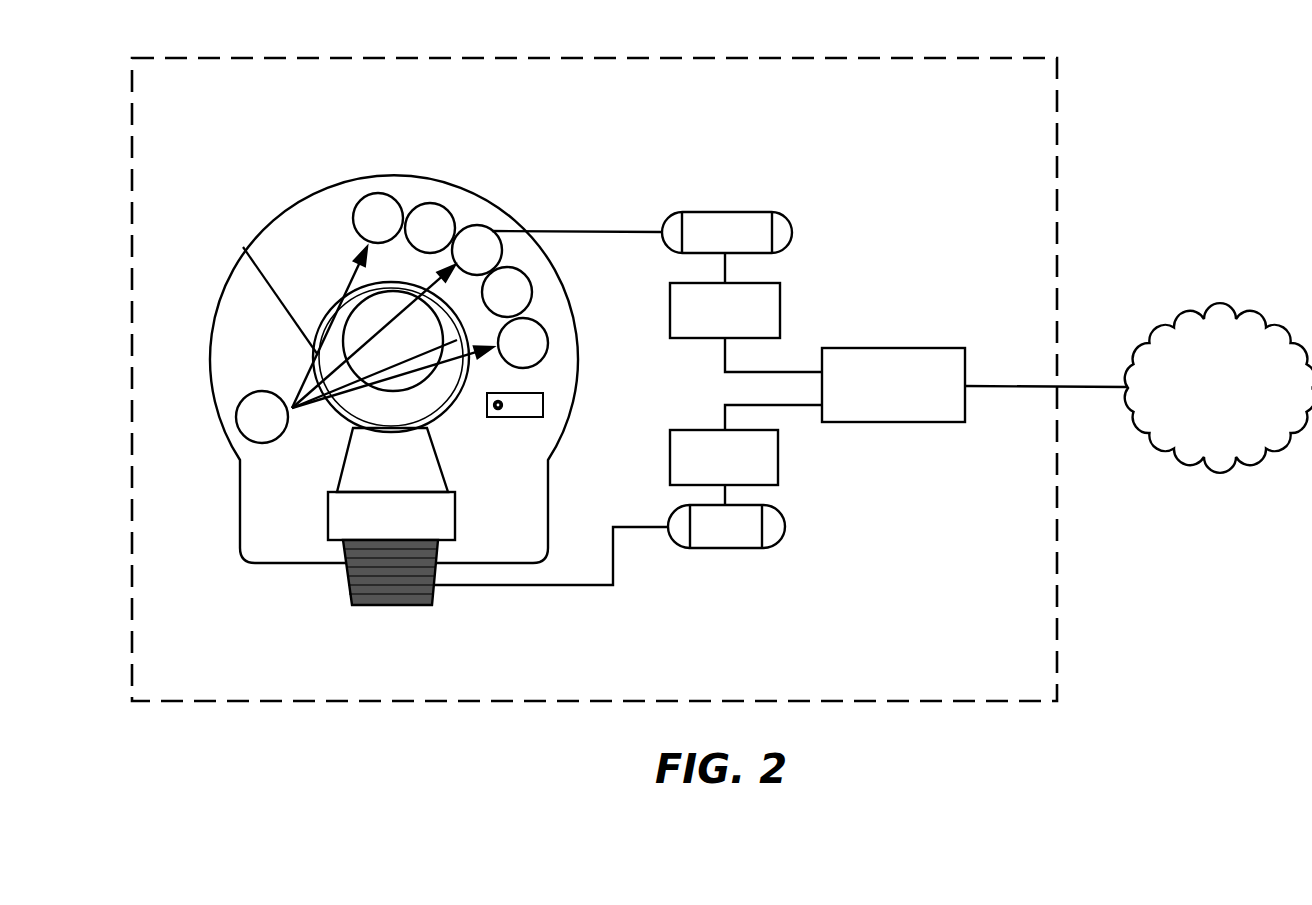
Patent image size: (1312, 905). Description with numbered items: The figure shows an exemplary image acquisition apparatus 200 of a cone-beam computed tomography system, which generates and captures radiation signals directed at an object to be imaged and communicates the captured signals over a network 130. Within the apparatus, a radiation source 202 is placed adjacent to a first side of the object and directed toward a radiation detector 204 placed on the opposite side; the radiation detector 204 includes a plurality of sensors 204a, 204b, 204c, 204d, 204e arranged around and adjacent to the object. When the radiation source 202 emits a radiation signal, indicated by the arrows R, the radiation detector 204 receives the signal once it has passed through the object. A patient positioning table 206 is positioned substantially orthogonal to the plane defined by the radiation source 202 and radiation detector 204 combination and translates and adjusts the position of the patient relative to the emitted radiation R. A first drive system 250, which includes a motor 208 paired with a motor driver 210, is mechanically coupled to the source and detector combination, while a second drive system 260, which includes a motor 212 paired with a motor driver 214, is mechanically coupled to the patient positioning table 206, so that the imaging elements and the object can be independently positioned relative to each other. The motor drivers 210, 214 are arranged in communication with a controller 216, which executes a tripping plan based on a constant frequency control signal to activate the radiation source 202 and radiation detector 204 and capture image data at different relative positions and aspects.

The image acquisition apparatus 200 is at (317, 47).
The radiation source 202 is at (245, 403).
The radiation detector 204 is at (420, 251).
The sensor 204a is at (378, 218).
The sensor 204b is at (430, 228).
The sensor 204c is at (477, 250).
The sensor 204d is at (507, 292).
The sensor 204e is at (523, 343).
The patient positioning table 206 is at (328, 525).
The motor 208 is at (725, 212).
The motor driver 210 is at (778, 285).
The motor 212 is at (782, 533).
The motor driver 214 is at (777, 458).
The controller 216 is at (893, 348).
The first drive system 250 is at (849, 172).
The second drive system 260 is at (912, 570).
The network 130 is at (1218, 388).
The radiation signal R is at (243, 247).